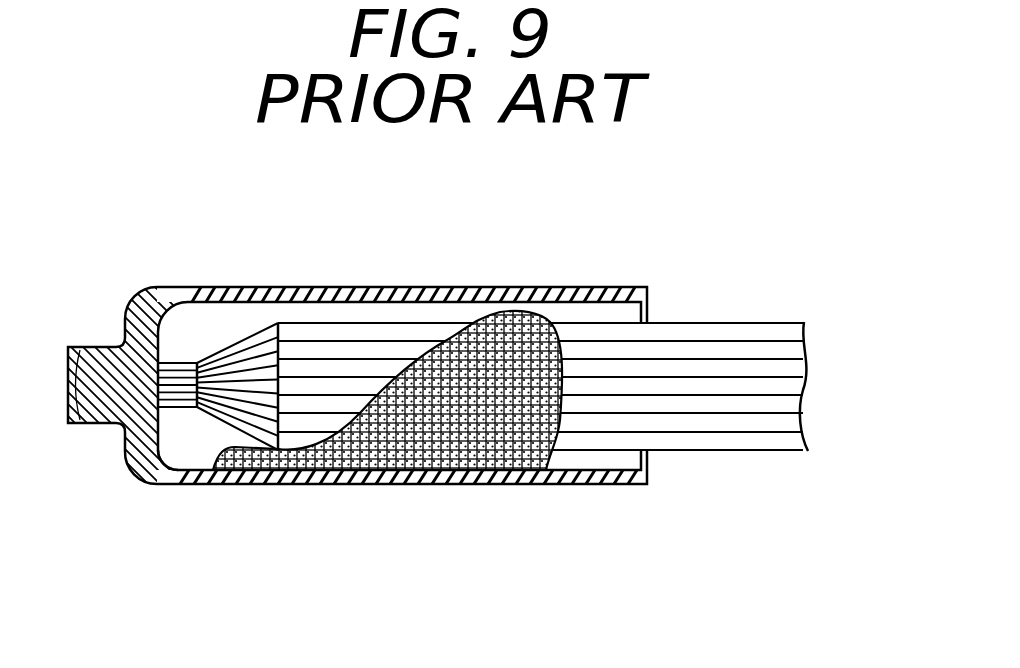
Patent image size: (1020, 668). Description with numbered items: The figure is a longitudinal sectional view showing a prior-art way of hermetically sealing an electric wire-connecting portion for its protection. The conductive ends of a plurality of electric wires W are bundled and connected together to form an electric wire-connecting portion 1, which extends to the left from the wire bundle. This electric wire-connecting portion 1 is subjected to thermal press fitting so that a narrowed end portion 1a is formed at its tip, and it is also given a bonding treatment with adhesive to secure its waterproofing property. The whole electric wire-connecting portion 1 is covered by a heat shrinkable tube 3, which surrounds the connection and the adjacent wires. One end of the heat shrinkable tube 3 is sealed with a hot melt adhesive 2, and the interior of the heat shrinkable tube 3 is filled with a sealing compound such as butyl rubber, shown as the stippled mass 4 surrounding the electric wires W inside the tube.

The electric wire-connecting portion 1 is at (243, 337).
The end portion 1a is at (185, 367).
The hot melt adhesive 2 is at (158, 427).
The heat shrinkable tube 3 is at (393, 298).
The sealant 4 is at (437, 456).
The electric wires W is at (773, 443).